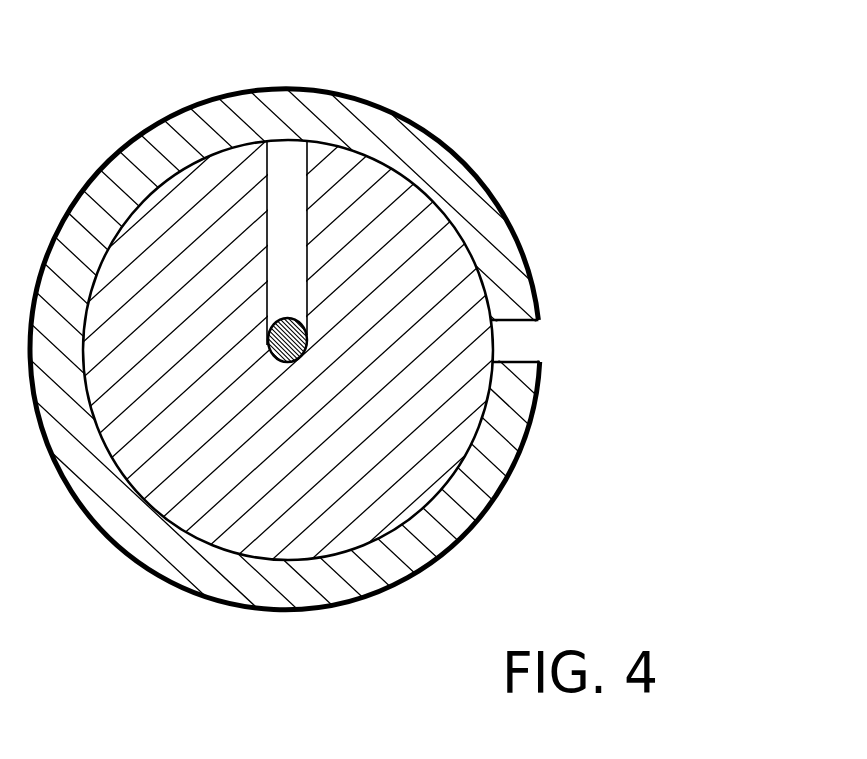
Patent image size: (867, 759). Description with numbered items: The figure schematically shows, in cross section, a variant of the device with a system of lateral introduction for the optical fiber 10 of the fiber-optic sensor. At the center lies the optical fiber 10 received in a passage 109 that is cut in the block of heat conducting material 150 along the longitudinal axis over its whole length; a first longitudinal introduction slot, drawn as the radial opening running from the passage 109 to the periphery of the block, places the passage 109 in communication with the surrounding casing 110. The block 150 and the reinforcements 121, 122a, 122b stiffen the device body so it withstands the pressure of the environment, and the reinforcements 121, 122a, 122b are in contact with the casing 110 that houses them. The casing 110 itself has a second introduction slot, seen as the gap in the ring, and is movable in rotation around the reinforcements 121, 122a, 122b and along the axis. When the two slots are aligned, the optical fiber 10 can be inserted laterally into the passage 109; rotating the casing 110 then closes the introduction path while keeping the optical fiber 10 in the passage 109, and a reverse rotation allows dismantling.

The optical fiber 10 is at (270, 353).
The passage 109 is at (285, 333).
The casing 110 is at (492, 465).
The block made of heat conducting material 150 is at (433, 370).
The reinforcement 121 is at (433, 370).
The reinforcement 122a is at (433, 370).
The reinforcement 122b is at (418, 231).